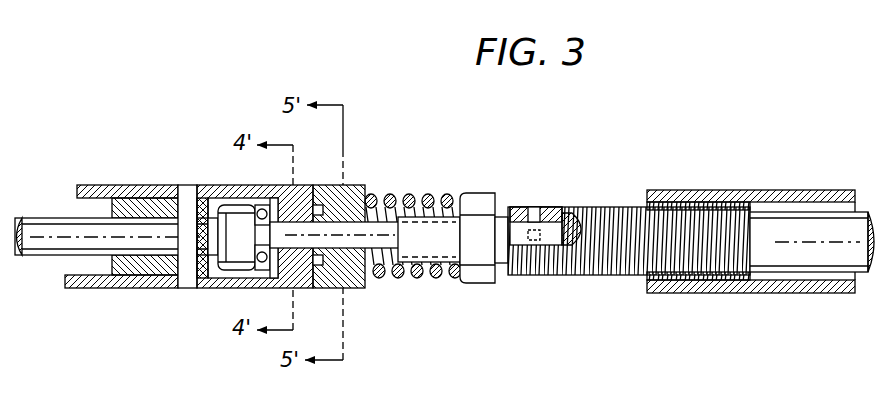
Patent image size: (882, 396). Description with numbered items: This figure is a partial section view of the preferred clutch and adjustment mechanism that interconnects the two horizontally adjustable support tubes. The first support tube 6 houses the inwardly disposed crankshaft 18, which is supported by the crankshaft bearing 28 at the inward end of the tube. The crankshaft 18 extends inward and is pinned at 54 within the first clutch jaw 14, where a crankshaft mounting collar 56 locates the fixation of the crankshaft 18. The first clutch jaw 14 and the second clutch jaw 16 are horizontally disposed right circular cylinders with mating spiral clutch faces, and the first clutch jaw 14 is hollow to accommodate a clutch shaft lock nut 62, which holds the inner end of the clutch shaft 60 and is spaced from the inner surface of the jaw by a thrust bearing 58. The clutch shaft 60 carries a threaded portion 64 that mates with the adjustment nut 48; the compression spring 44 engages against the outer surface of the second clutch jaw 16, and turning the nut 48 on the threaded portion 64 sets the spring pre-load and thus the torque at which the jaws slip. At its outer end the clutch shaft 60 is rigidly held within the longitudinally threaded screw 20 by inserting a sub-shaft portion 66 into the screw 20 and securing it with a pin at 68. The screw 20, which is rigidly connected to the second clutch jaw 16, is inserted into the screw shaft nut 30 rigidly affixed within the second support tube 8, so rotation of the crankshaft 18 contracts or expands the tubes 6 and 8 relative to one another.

The first support tube 6 is at (92, 291).
The second support tube 8 is at (807, 188).
The first clutch jaw 14 is at (222, 294).
The second clutch jaw 16 is at (357, 185).
The crankshaft 18 is at (53, 216).
The longitudinally threaded screw 20 is at (647, 190).
The crankshaft support 28 is at (142, 198).
The screw shaft nut 30 is at (701, 200).
The compression spring 44 is at (385, 200).
The adjustment nut 48 is at (478, 193).
The pin 54 is at (190, 184).
The crankshaft mounting collar 56 is at (221, 198).
The thrust bearing 58 is at (272, 270).
The clutch shaft 60 is at (357, 249).
The clutch shaft lock nut 62 is at (206, 283).
The threaded portion 64 is at (441, 253).
The sub-shaft portion 66 is at (559, 233).
The pin 68 is at (538, 206).